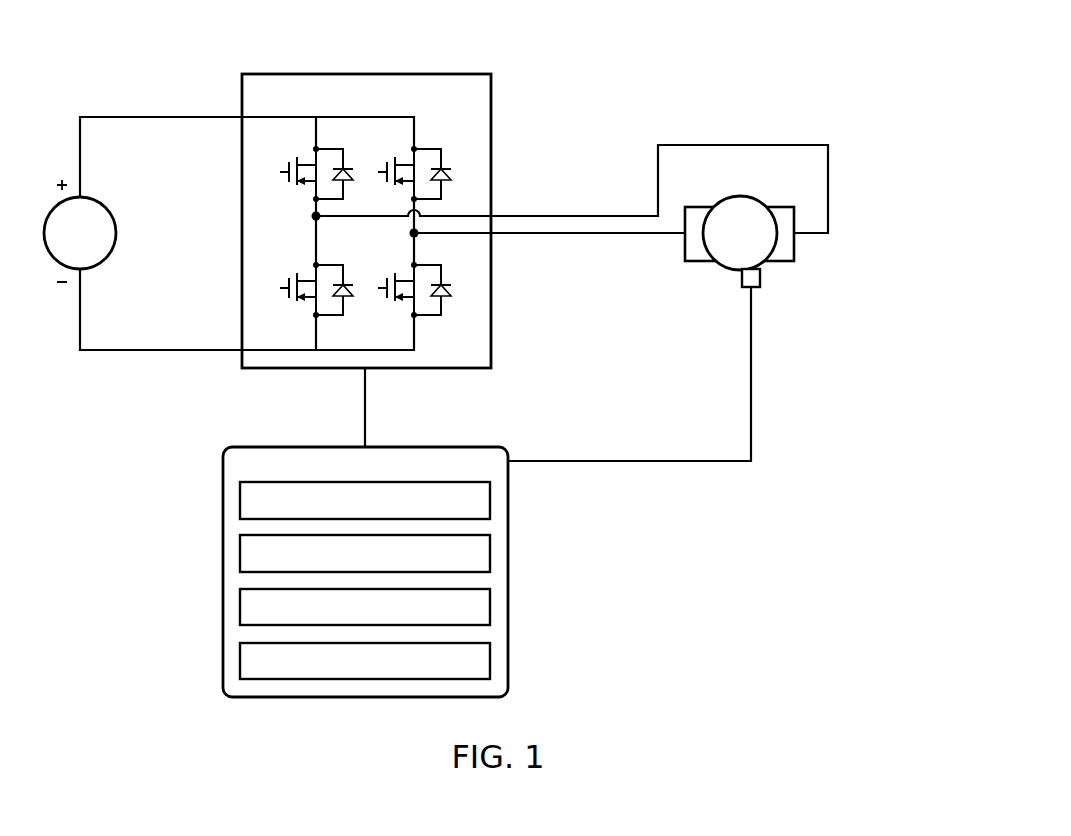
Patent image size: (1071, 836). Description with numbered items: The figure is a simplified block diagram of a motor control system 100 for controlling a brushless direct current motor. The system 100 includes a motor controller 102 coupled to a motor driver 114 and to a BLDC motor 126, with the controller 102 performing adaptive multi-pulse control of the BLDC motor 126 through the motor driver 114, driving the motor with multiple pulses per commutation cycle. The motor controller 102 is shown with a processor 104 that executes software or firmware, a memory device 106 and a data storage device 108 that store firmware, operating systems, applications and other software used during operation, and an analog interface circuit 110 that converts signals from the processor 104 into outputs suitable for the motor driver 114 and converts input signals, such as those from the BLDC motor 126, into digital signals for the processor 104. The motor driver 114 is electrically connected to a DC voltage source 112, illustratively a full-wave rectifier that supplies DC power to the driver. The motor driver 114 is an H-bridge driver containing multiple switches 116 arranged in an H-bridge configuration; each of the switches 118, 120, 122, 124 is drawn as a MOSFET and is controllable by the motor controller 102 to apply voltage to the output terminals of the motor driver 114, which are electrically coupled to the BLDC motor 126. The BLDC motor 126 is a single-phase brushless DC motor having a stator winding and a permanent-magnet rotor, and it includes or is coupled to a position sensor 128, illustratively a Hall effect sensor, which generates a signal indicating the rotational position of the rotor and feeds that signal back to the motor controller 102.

The motor control system 100 is at (918, 76).
The motor controller 102 is at (448, 447).
The processor 104 is at (490, 502).
The memory device 106 is at (490, 555).
The data storage device 108 is at (490, 609).
The analog interface circuit 110 is at (490, 662).
The DC voltage source 112 is at (93, 201).
The motor driver 114 is at (437, 74).
The switches 116 is at (254, 97).
The switch 118 is at (248, 172).
The switch 120 is at (480, 162).
The switch 122 is at (248, 287).
The switch 124 is at (480, 293).
The BLDC motor 126 is at (748, 198).
The position sensor 128 is at (762, 272).